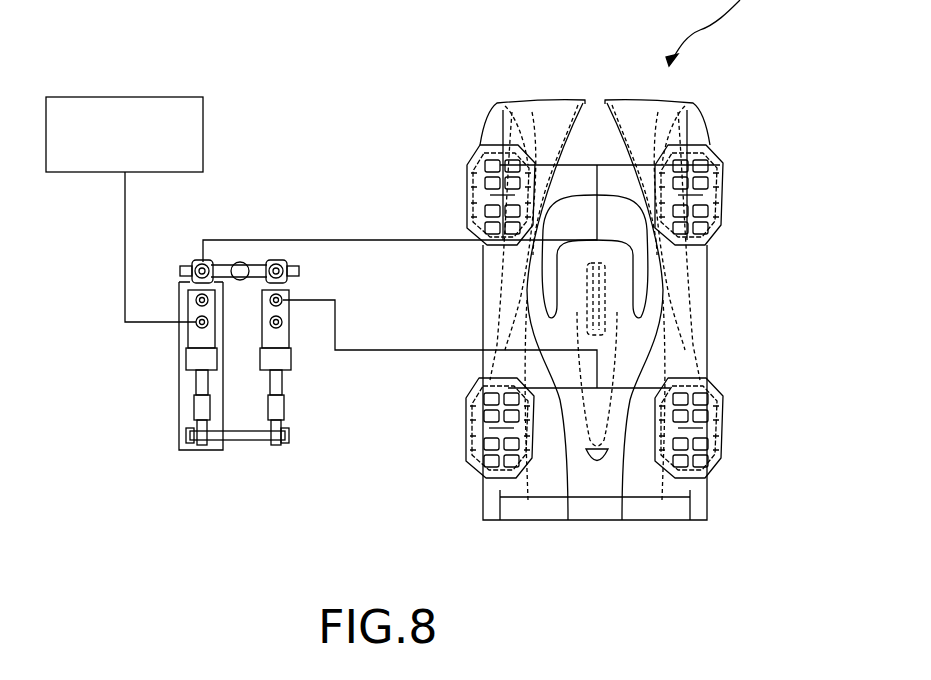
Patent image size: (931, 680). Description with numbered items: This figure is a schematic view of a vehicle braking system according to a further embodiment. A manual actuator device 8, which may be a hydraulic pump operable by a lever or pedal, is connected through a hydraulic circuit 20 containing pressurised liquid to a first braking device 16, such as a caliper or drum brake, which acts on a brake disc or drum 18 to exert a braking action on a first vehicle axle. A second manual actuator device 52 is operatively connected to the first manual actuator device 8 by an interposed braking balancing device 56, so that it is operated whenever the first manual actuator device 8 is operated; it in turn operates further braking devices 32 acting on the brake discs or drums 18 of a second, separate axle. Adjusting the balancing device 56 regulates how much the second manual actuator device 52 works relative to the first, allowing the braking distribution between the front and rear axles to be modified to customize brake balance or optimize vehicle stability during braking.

The manual actuator device 8 is at (199, 303).
The first braking device 16 is at (472, 160).
The brake disc or drum 18 is at (503, 145).
The hydraulic circuit 20 is at (327, 212).
The further braking devices 32 is at (722, 158).
The second manual actuator device 52 is at (282, 340).
The braking balancing device 56 is at (240, 262).